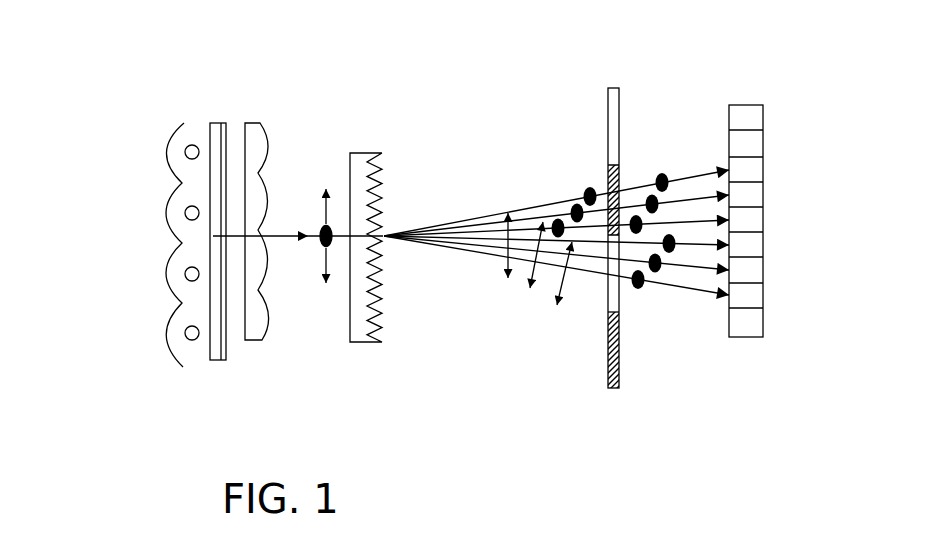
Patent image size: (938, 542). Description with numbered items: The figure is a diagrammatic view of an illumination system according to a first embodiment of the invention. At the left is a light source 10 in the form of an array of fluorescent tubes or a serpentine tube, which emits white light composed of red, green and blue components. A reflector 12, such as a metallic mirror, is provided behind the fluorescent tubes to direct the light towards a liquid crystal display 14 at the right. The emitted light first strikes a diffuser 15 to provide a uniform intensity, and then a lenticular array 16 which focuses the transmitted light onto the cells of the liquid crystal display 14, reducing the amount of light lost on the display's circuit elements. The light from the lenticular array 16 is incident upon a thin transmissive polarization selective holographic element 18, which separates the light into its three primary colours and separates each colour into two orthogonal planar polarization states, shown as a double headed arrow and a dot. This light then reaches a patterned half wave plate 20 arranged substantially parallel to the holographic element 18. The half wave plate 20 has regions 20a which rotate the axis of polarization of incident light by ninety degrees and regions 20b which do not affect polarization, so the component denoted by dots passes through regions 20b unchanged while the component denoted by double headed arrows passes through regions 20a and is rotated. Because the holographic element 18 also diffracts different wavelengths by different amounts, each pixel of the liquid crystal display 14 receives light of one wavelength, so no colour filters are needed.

The light source 10 is at (185, 149).
The reflector 12 is at (167, 279).
The liquid crystal display 14 is at (744, 325).
The diffuser 15 is at (218, 125).
The lenticular array 16 is at (248, 340).
The polarization selective holographic element 18 is at (362, 153).
The patterned half wave plate 20 is at (563, 274).
The regions which rotate the axis of polarization 20a is at (606, 298).
The regions which do not affect the polarization 20b is at (608, 177).